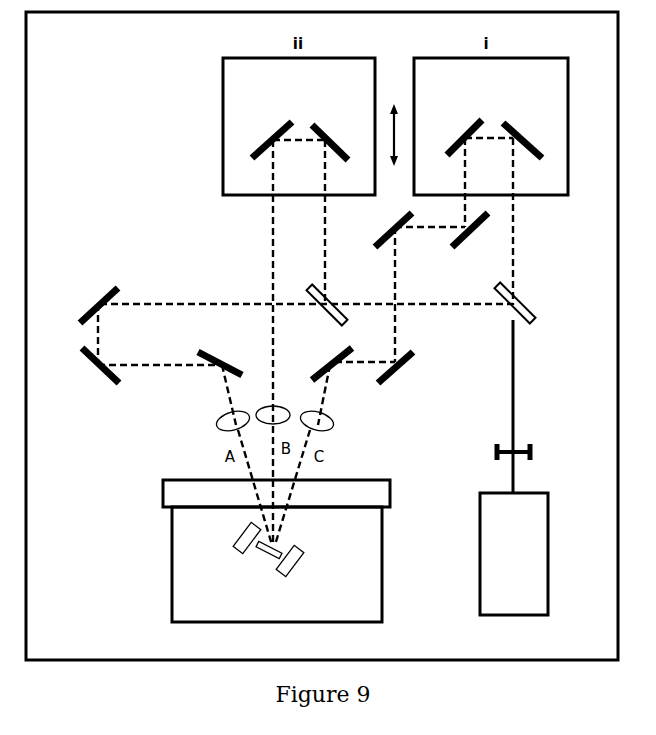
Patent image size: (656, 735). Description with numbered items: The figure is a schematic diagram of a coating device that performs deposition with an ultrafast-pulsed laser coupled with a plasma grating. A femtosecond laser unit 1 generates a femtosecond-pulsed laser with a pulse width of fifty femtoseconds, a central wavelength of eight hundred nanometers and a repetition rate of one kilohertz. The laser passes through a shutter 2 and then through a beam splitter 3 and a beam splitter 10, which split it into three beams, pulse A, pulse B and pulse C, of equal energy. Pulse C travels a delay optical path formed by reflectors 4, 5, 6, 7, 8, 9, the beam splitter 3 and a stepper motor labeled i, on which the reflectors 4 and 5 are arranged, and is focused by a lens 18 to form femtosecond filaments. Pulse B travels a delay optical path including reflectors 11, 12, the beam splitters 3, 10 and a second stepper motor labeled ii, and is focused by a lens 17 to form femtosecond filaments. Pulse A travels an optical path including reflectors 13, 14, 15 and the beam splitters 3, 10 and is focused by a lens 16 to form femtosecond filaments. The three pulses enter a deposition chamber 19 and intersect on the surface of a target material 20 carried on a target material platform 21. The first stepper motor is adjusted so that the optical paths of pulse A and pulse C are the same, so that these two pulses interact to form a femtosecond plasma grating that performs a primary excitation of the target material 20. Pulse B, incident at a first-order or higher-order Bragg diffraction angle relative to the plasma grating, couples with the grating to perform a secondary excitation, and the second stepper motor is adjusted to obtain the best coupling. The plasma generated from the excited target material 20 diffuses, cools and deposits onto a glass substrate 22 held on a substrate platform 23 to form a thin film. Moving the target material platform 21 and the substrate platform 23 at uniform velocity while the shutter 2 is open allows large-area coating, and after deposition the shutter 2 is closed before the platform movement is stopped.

The femtosecond laser unit 1 is at (514, 554).
The shutter 2 is at (535, 447).
The beam splitter 3 is at (528, 306).
The reflector 4 is at (515, 131).
The reflector 5 is at (463, 133).
The reflector 6 is at (468, 232).
The reflector 7 is at (397, 232).
The reflector 8 is at (402, 363).
The reflector 9 is at (327, 368).
The beam splitter 10 is at (330, 297).
The reflector 11 is at (325, 131).
The reflector 12 is at (272, 137).
The reflector 13 is at (100, 305).
The reflector 14 is at (98, 370).
The reflector 15 is at (220, 362).
The lens 16 is at (217, 419).
The lens 17 is at (281, 408).
The lens 18 is at (333, 419).
The deposition chamber 19 is at (383, 560).
The target material 20 is at (271, 563).
The target material platform 21 is at (302, 547).
The substrate 22 is at (250, 553).
The substrate platform 23 is at (240, 541).